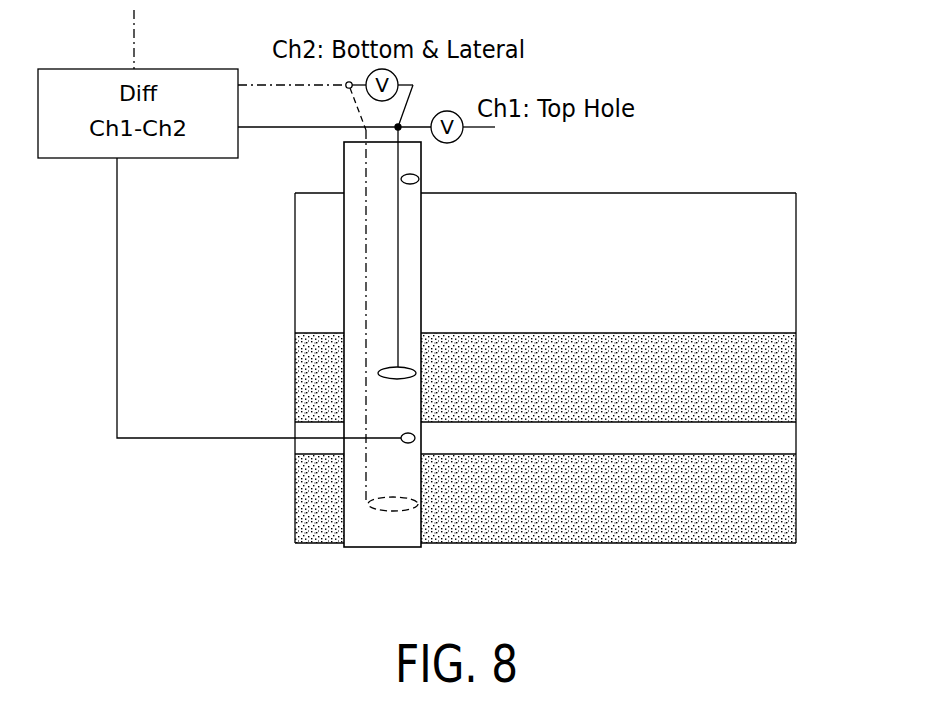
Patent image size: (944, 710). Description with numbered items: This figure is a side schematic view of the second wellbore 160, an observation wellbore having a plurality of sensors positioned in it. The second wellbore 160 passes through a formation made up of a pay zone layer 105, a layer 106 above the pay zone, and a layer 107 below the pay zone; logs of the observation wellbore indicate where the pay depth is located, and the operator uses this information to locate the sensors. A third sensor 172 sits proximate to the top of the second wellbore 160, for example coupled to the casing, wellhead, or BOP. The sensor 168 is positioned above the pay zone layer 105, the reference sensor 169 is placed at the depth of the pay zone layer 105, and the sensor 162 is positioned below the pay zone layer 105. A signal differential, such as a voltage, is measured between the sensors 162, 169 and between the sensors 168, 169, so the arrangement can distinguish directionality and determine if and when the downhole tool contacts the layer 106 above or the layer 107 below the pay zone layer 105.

The second wellbore 160 is at (324, 274).
The first sensor 162 is at (392, 499).
The second sensor 168 is at (378, 376).
The reference sensor 169 is at (404, 433).
The third sensor 172 is at (495, 127).
The pay zone layer 105 is at (860, 454).
The layer above the pay zone 106 is at (860, 422).
The layer below the pay zone 107 is at (571, 498).